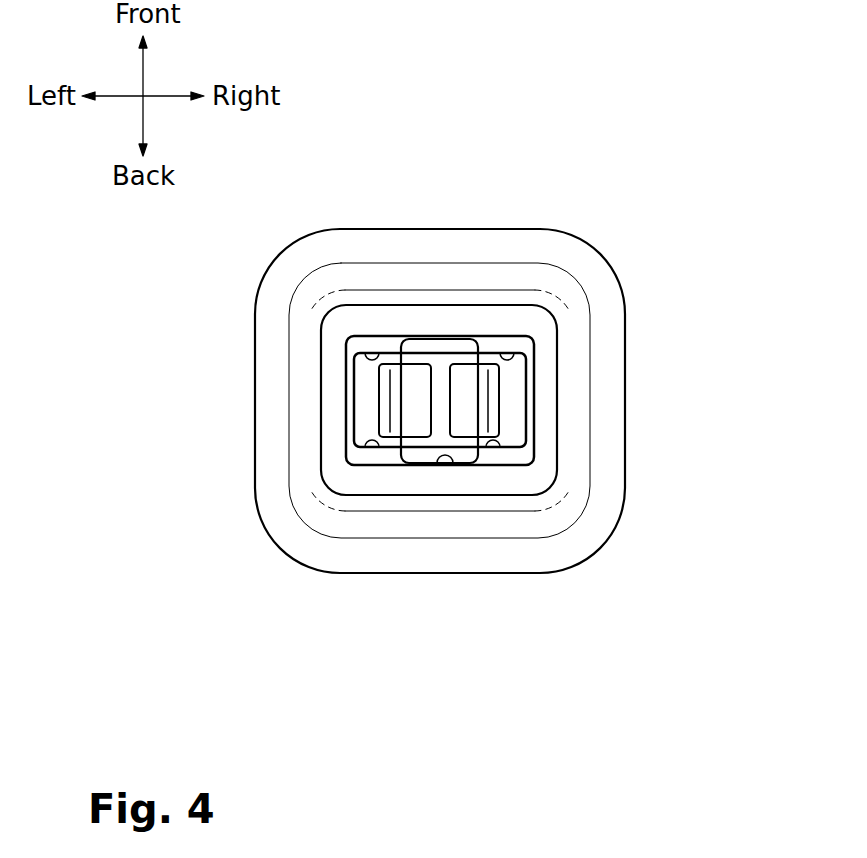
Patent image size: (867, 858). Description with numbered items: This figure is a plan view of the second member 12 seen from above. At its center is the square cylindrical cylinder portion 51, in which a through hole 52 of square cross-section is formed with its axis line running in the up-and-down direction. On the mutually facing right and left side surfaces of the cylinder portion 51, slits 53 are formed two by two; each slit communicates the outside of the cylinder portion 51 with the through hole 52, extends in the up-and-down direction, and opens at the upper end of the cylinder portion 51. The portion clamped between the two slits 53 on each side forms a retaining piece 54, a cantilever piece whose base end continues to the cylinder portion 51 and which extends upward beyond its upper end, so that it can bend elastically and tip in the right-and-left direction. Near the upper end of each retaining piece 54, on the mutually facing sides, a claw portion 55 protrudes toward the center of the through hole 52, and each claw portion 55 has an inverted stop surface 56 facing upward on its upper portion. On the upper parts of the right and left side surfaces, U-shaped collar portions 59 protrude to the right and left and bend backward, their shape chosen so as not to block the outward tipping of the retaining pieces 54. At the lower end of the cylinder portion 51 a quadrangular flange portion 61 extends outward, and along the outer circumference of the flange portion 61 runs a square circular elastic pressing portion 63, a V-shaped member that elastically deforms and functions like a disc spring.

The second member 12 is at (626, 212).
The cylinder portion 51 is at (412, 488).
The through hole 52 is at (453, 452).
The slits 53 is at (365, 353).
The retaining pieces 54 is at (385, 397).
The claw portions 55 is at (423, 360).
The inverted stop surface 56 is at (412, 383).
The collar portions 59 is at (327, 443).
The flange portion 61 is at (503, 297).
The elastic pressing portion 63 is at (610, 372).